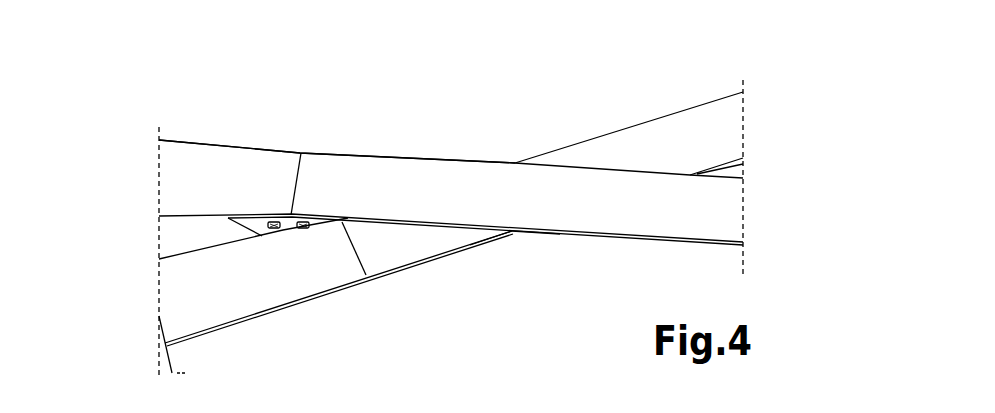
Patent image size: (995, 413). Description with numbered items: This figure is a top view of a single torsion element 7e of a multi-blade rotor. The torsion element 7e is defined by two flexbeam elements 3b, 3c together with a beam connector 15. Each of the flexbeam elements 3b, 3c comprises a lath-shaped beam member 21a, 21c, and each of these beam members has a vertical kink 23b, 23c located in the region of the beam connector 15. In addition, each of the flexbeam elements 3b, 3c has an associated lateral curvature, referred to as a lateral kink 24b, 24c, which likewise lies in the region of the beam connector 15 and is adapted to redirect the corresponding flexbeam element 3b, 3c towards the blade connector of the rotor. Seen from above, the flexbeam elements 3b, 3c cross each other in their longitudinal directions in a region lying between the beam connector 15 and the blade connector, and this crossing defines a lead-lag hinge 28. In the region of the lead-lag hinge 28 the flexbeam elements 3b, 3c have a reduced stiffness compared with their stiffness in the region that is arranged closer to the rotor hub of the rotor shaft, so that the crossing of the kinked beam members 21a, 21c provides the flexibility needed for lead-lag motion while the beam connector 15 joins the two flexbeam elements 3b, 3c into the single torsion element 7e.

The flexbeam element 3b is at (188, 172).
The flexbeam element 3c is at (173, 288).
The torsion element 7e is at (593, 100).
The beam connector 15 is at (245, 224).
The lath-shaped beam member 21a is at (716, 205).
The lath-shaped beam member 21c is at (710, 133).
The vertical kink 23b is at (288, 184).
The vertical kink 23c is at (350, 246).
The lateral kink 24b is at (321, 142).
The lateral kink 24c is at (375, 284).
The lead-lag hinge 28 is at (513, 238).